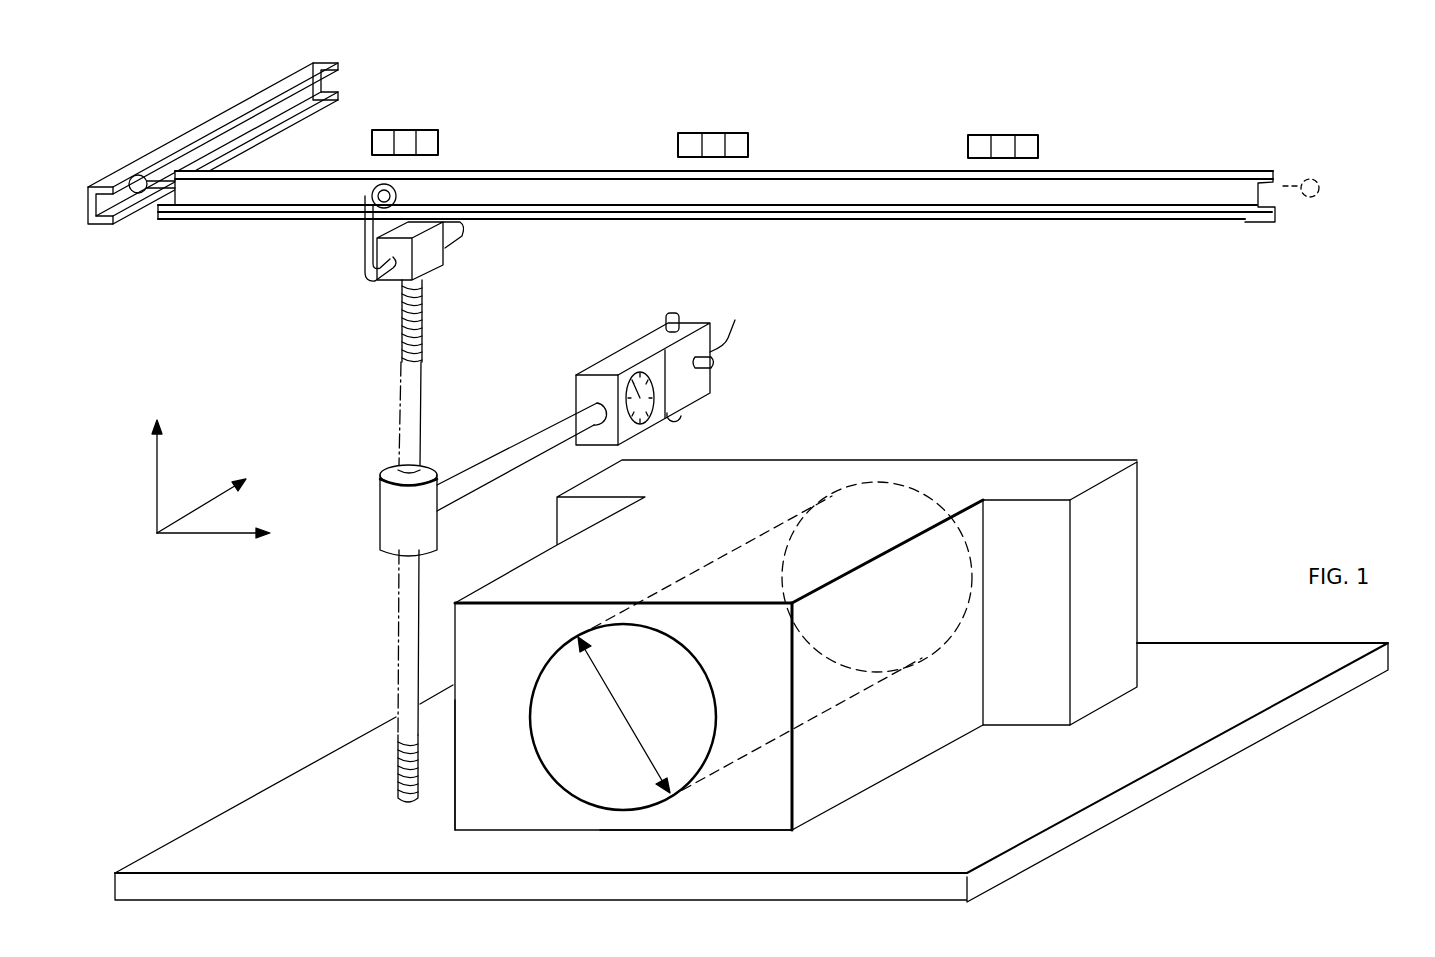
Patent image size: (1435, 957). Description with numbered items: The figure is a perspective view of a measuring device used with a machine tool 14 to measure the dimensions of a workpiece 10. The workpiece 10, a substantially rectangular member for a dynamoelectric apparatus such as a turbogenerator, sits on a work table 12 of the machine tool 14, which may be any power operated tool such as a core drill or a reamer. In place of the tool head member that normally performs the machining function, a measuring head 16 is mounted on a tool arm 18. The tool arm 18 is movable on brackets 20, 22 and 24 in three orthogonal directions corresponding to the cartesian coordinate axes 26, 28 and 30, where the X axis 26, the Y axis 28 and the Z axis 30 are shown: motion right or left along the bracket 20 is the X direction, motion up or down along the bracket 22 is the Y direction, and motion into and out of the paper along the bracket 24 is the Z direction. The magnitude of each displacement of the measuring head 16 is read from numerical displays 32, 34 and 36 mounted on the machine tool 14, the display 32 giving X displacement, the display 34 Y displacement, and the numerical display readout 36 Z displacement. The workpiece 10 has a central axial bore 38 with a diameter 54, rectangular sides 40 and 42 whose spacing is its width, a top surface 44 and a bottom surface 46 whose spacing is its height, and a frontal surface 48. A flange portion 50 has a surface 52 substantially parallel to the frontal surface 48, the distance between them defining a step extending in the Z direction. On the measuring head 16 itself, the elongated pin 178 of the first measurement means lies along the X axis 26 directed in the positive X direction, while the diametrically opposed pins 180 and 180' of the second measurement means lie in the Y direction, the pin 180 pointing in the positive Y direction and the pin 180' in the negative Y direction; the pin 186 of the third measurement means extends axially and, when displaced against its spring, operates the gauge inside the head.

The workpiece 10 is at (797, 640).
The work table 12 is at (1247, 735).
The machine tool 14 is at (942, 129).
The measuring head 16 is at (674, 356).
The tool arm 18 is at (522, 448).
The bracket 20 is at (515, 220).
The bracket 22 is at (422, 362).
The bracket 24 is at (287, 118).
The X axis 26 is at (238, 538).
The Y axis 28 is at (157, 492).
The Z axis 30 is at (205, 503).
The numerical display 32 is at (408, 130).
The numerical display 34 is at (737, 133).
The numerical display readout 36 is at (996, 135).
The central axial bore 38 is at (707, 722).
The rectangular side 40 is at (506, 576).
The rectangular side 42 is at (937, 733).
The top surface 44 is at (785, 466).
The bottom surface 46 is at (748, 833).
The frontal surface 48 is at (472, 800).
The flange portion 50 is at (1125, 488).
The surface 52 is at (1023, 517).
The diameter 54 is at (610, 690).
The elongated pin 178 is at (714, 362).
The elongated pin 180 is at (679, 299).
The elongated pin 180' is at (708, 420).
The elongated pin 186 is at (738, 310).